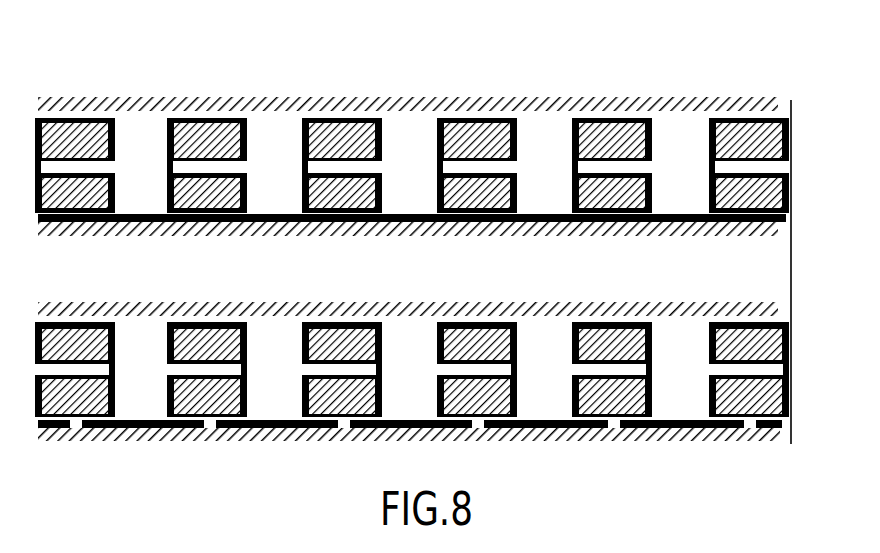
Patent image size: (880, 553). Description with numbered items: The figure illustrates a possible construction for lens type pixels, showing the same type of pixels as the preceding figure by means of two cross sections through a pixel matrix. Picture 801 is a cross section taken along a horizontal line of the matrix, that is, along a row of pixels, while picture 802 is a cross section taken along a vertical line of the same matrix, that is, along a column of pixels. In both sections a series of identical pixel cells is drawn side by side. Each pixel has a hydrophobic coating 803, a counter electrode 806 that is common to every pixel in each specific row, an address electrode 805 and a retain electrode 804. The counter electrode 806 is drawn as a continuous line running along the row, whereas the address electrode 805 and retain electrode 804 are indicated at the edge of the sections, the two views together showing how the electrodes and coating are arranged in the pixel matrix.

The picture 801 is at (429, 159).
The picture 802 is at (412, 291).
The hydrophobic coating 803 is at (660, 153).
The retain electrode 804 is at (792, 140).
The address electrode 805 is at (792, 198).
The counter electrode 806 is at (170, 224).